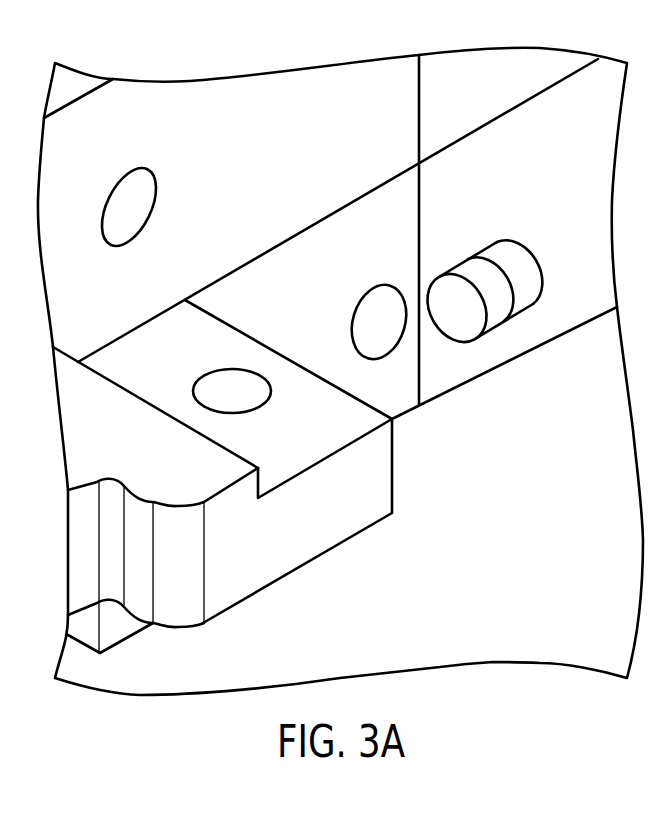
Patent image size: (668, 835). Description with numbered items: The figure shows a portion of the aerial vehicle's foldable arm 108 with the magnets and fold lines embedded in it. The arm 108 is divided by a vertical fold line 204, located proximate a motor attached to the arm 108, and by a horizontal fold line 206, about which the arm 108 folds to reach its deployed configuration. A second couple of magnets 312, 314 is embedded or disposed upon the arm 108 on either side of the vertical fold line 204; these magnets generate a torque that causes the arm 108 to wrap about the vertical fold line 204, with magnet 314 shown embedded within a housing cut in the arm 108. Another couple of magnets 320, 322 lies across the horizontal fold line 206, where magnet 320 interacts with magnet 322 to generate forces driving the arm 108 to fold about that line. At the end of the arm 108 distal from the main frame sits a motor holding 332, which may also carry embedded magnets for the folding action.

The arm 108 is at (368, 72).
The vertical fold line 204 is at (420, 75).
The horizontal fold line 206 is at (543, 93).
The magnet 312 is at (482, 335).
The magnet 314 is at (377, 335).
The magnet 320 is at (138, 185).
The magnet 322 is at (240, 382).
The motor holding 332 is at (257, 578).